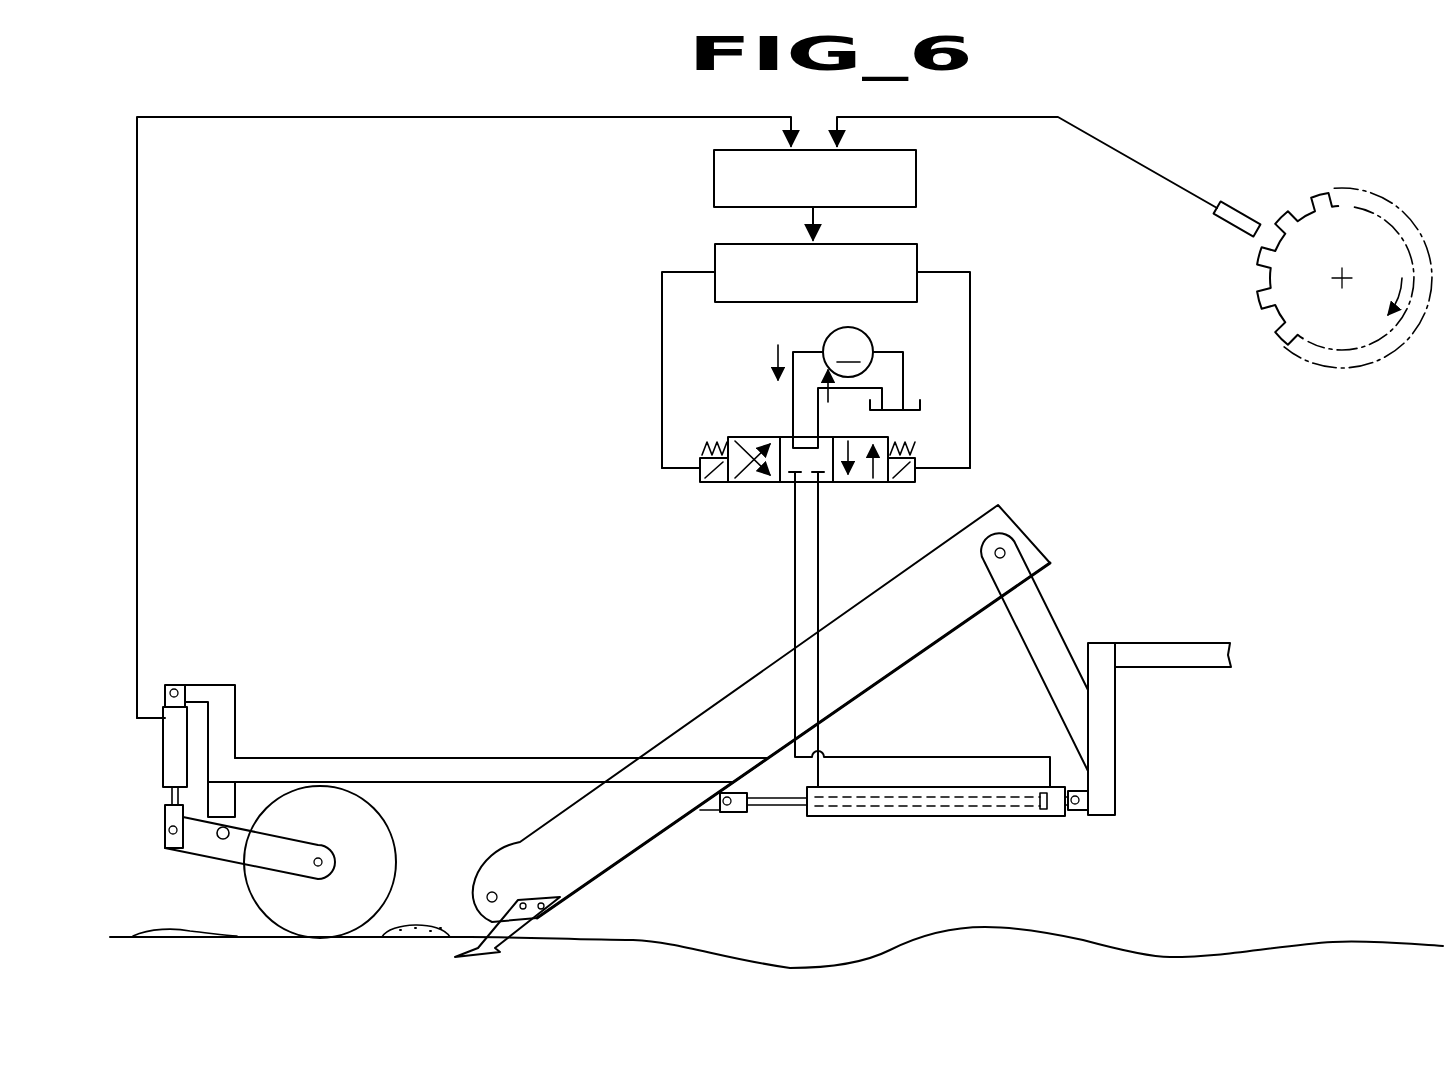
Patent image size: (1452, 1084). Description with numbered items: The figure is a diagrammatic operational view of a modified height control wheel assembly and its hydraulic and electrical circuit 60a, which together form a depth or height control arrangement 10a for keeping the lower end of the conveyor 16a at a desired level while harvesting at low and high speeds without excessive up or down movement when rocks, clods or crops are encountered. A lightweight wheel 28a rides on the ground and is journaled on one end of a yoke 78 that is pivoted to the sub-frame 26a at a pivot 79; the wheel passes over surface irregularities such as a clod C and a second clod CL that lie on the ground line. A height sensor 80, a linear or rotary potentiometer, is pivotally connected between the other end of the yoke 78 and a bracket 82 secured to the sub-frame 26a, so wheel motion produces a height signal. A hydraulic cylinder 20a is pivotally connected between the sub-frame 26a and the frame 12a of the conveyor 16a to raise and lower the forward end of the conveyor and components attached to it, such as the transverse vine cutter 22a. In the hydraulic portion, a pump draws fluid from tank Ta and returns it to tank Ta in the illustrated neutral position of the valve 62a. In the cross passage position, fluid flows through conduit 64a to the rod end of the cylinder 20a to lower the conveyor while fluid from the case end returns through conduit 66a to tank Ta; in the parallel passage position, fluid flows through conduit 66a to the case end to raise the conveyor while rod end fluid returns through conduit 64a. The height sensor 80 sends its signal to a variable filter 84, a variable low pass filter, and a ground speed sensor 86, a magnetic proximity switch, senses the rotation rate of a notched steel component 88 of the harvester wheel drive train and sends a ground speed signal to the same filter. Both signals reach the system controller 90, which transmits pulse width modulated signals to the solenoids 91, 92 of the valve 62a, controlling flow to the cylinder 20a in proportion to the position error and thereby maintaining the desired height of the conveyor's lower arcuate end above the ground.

The hydraulic and electrical circuit 60a is at (1147, 125).
The variable filter 84 is at (815, 178).
The system controller 90 is at (907, 250).
The valve 62a is at (758, 442).
The solenoid 91 is at (703, 483).
The solenoid 92 is at (915, 483).
The tank Ta is at (922, 402).
The conduit 66a is at (795, 598).
The conduit 64a is at (818, 596).
The hydraulic cylinder 20a is at (830, 817).
The frame 12a is at (1110, 693).
The conveyor 16a is at (1053, 544).
The depth control system 10a is at (1088, 458).
The transverse vine cutter 22a is at (493, 957).
The sub-frame 26a is at (526, 757).
The height sensor 80 is at (163, 712).
The bracket 82 is at (232, 703).
The lightweight wheel 28a is at (380, 821).
The yoke 78 is at (267, 857).
The pivot 79 is at (221, 841).
The clod CL is at (170, 930).
The clod C is at (432, 920).
The ground speed sensor 86 is at (1235, 232).
The notched steel component 88 is at (1315, 196).